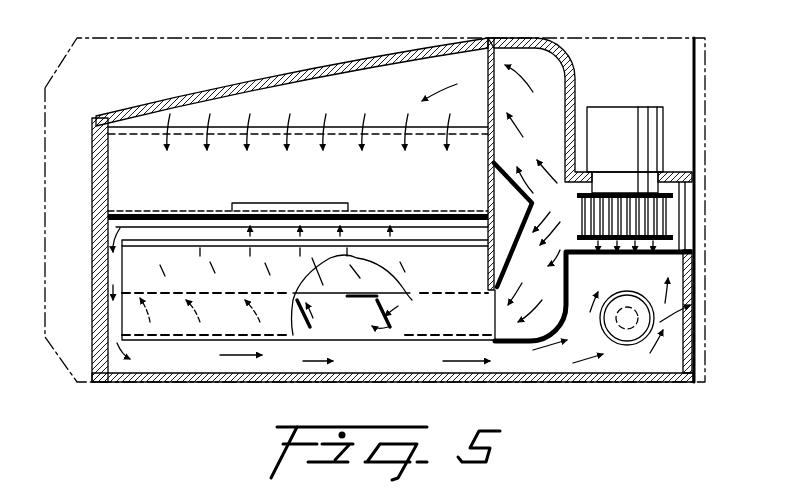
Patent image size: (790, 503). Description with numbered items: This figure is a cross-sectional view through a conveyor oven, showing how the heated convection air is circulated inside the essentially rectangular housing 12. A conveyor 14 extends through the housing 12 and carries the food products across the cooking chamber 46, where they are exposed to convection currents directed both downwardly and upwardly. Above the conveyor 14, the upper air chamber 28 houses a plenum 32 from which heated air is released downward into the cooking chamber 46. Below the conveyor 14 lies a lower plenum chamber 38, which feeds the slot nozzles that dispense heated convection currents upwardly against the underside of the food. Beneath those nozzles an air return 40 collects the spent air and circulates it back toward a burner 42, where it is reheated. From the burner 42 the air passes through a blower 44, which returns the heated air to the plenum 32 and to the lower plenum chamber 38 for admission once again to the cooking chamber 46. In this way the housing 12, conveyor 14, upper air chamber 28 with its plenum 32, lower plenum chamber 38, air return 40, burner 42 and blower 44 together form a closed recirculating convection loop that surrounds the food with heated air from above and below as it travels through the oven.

The housing 12 is at (285, 38).
The upper air chamber 28 is at (181, 99).
The plenum 32 is at (415, 97).
The cooking chamber 46 is at (412, 194).
The conveyor 14 is at (167, 211).
The lower plenum chamber 38 is at (350, 327).
The air return 40 is at (390, 371).
The blower 44 is at (663, 217).
The burner 42 is at (657, 316).